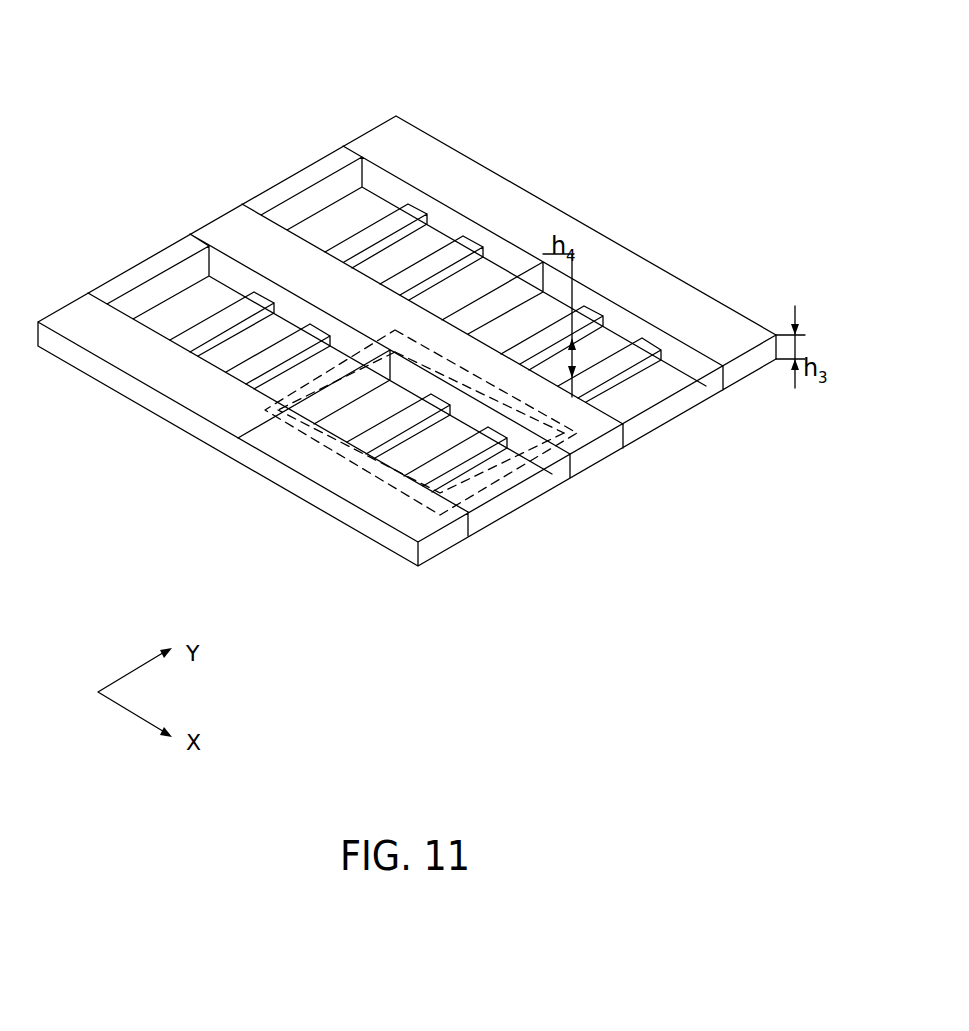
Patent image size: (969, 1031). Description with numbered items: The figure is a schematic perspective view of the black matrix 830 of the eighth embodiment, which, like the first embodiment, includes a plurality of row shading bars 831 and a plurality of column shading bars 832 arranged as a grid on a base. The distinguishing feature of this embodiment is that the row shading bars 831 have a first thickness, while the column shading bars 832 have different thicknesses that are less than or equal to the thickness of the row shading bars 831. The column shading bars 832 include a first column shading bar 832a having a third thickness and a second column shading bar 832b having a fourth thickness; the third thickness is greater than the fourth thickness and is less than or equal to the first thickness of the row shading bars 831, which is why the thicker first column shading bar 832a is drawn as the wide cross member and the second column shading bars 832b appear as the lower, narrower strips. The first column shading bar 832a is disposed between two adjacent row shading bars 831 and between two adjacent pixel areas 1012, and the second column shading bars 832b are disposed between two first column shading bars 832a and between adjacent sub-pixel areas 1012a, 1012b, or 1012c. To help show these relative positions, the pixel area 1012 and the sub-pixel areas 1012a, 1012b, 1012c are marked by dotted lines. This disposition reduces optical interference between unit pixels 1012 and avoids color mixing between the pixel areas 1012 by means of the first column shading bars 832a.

The black matrix 830 is at (205, 58).
The row shading bar 831 is at (74, 305).
The column shading bar 832 is at (117, 440).
The first column shading bar 832a is at (76, 302).
The second column shading bar 832b is at (167, 343).
The pixel area 1012 is at (252, 405).
The sub-pixel area 1012a is at (283, 433).
The sub-pixel area 1012b is at (353, 473).
The sub-pixel area 1012c is at (430, 497).